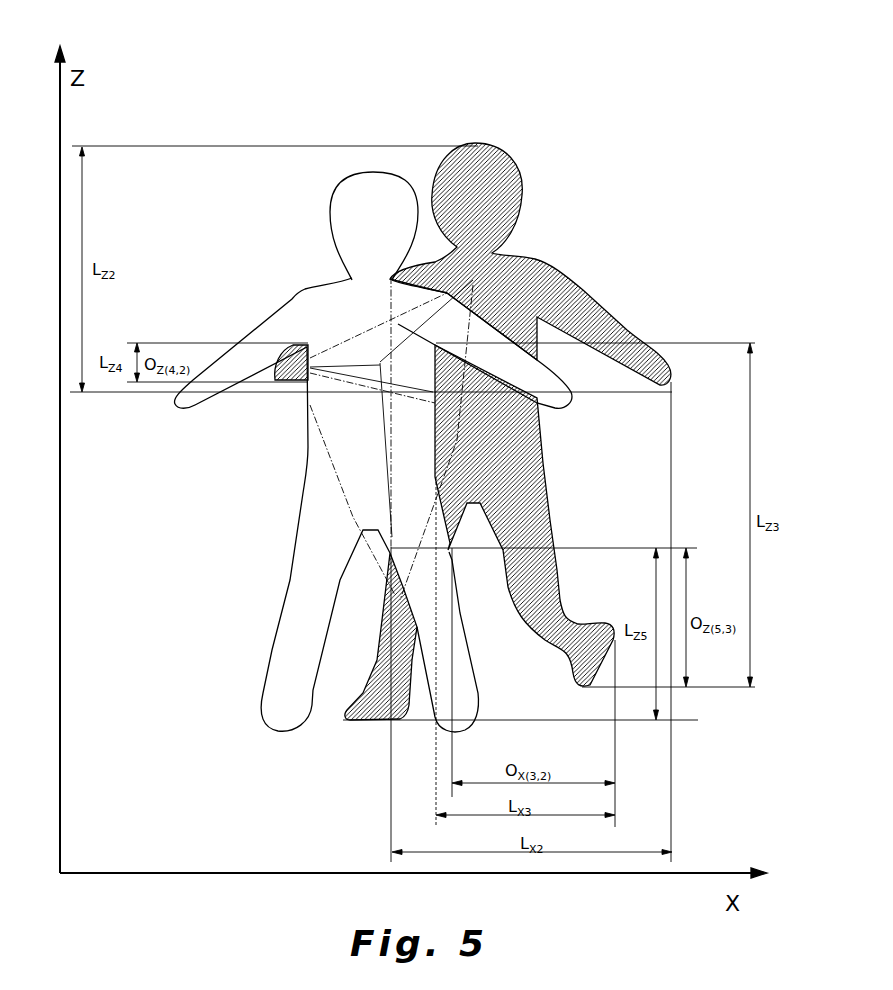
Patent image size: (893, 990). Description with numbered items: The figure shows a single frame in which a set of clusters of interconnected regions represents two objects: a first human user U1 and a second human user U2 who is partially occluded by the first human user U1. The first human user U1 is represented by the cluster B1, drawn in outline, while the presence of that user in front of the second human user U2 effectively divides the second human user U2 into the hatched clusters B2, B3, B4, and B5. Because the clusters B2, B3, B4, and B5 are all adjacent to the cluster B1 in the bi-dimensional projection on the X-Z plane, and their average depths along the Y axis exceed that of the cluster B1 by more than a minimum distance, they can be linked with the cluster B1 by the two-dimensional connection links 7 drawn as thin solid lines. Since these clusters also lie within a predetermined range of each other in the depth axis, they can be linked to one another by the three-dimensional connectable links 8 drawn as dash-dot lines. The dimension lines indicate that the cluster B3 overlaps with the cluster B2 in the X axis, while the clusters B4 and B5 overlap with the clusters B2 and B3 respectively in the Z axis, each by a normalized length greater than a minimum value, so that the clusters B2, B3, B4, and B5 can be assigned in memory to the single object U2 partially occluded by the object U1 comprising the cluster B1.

The first human user U1 is at (296, 453).
The second human user U2 is at (569, 252).
The cluster B1 is at (377, 185).
The cluster B2 is at (497, 172).
The cluster B3 is at (528, 497).
The cluster B4 is at (293, 348).
The cluster B5 is at (357, 720).
The 2D connection links 7 is at (413, 338).
The 3D connectable links 8 is at (377, 327).